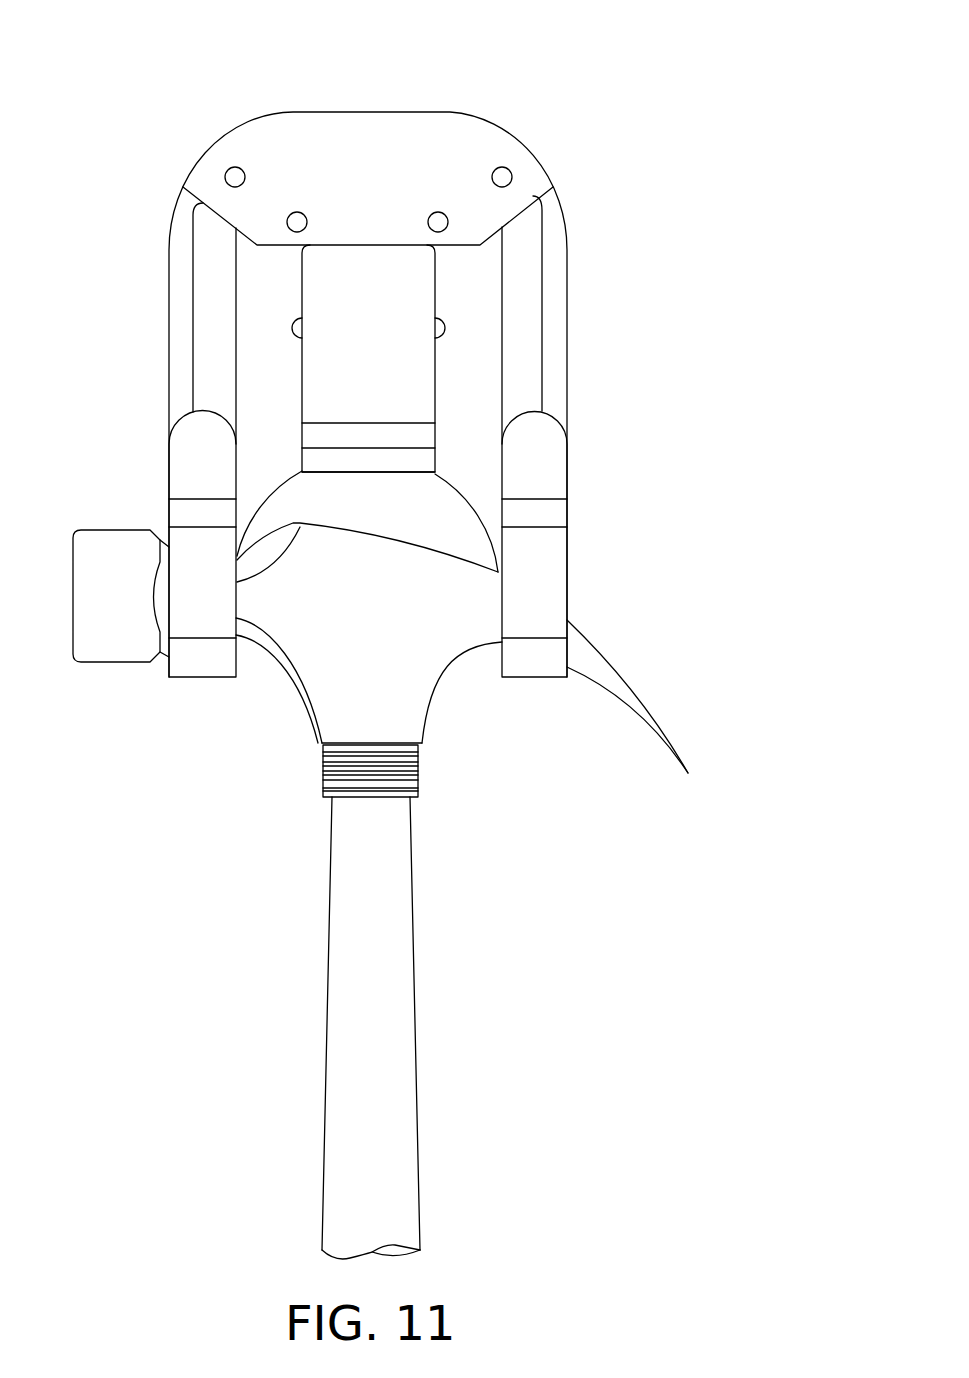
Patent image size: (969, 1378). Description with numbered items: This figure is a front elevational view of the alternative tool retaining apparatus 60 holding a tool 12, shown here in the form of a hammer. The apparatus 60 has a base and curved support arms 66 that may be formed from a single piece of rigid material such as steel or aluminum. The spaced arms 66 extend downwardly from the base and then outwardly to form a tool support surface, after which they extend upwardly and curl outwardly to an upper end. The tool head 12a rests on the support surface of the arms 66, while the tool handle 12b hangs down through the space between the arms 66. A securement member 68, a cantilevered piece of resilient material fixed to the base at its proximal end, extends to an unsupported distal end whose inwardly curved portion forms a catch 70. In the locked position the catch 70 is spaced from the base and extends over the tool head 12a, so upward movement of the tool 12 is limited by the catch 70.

The tool retaining apparatus 60 is at (556, 76).
The curved support arms 66 is at (180, 455).
The securement member 68 is at (378, 376).
The catch 70 is at (370, 465).
The tool 12 is at (387, 865).
The tool head 12a is at (602, 670).
The tool handle 12b is at (402, 1005).